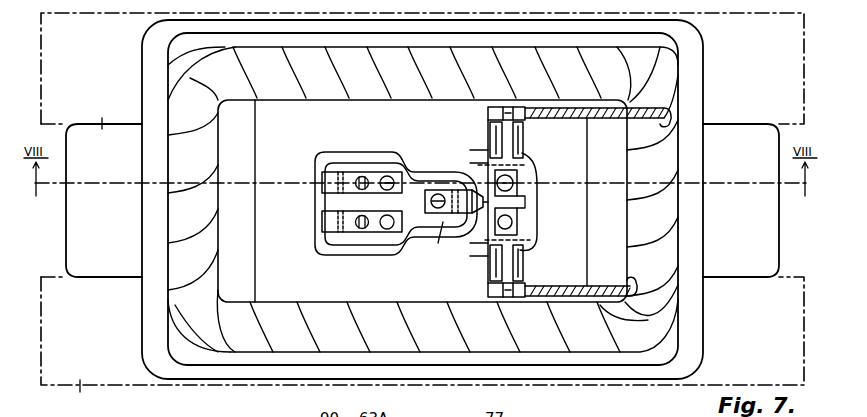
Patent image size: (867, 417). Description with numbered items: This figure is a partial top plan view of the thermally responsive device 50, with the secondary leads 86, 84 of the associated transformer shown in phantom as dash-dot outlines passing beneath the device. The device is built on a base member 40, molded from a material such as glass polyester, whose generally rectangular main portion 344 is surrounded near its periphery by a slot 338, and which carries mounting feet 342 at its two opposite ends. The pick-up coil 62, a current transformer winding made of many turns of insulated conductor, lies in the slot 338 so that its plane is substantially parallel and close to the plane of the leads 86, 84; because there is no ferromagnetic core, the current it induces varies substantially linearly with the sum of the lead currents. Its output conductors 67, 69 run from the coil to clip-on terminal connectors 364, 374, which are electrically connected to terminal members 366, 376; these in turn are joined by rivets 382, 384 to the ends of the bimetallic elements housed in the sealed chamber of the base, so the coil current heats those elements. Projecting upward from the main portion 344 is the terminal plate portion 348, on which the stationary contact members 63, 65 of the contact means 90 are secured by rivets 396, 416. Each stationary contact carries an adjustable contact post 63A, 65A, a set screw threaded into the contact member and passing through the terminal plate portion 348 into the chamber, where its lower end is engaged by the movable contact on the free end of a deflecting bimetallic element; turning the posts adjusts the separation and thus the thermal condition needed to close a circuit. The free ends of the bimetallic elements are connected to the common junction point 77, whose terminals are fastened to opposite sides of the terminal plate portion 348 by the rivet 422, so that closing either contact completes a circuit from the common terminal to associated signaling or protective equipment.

The base member 40 is at (745, 332).
The thermally responsive device 50 is at (173, 410).
The pick-up coil 62 is at (179, 291).
The stationary contact member 63 is at (322, 182).
The adjustable contact post 63A is at (362, 176).
The stationary contact member 65 is at (318, 229).
The adjustable contact post 65A is at (363, 229).
The output conductor 67 is at (564, 119).
The output conductor 69 is at (550, 287).
The common junction point 77 is at (451, 241).
The secondary lead 84 is at (82, 398).
The secondary lead 86 is at (101, 137).
The contact means 90 is at (304, 204).
The slot 338 is at (218, 358).
The mounting feet 342 is at (68, 229).
The main portion 344 is at (679, 81).
The terminal plate portion 348 is at (333, 167).
The clip-on terminal connector 364 is at (493, 141).
The terminal member 366 is at (523, 174).
The clip-on terminal connector 374 is at (490, 271).
The terminal member 376 is at (518, 234).
The rivet 382 is at (511, 185).
The rivet 384 is at (518, 211).
The rivet 396 is at (388, 176).
The rivet 416 is at (382, 228).
The rivet 422 is at (438, 194).